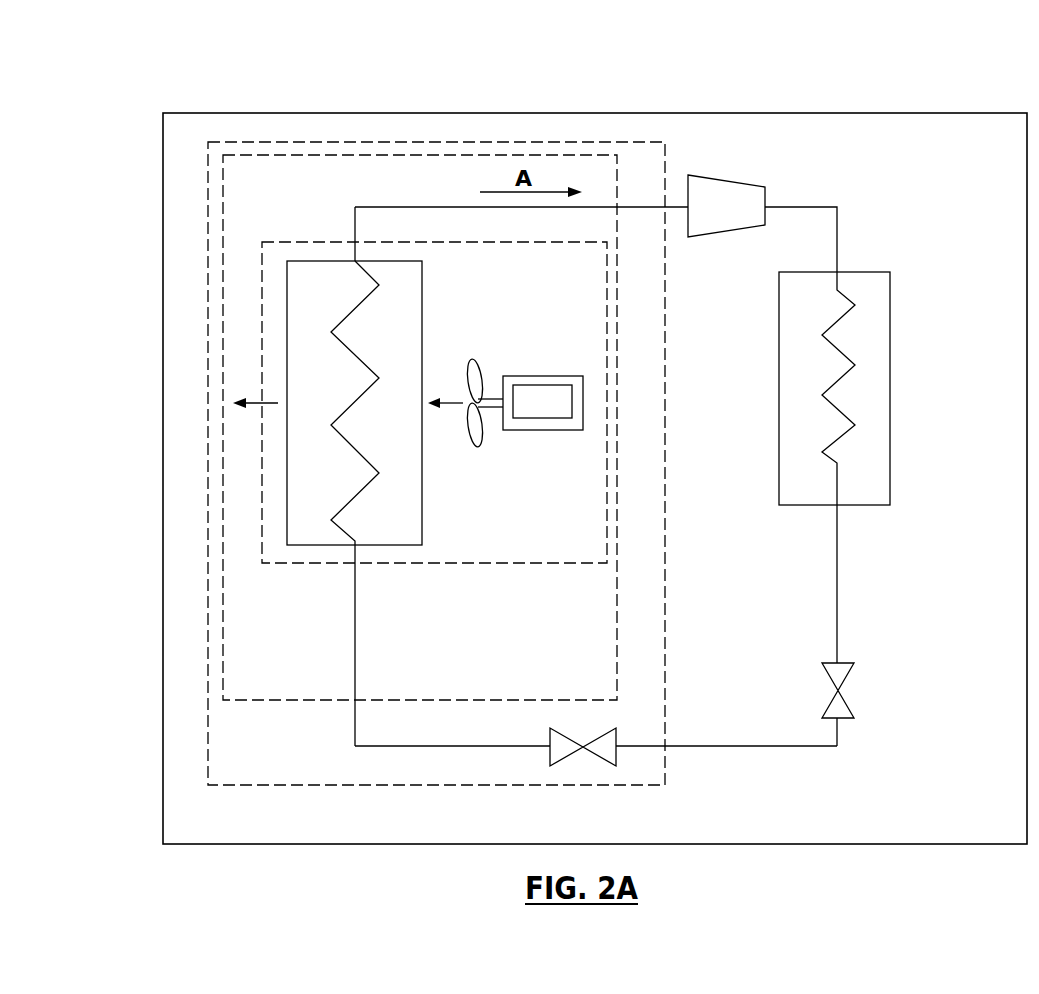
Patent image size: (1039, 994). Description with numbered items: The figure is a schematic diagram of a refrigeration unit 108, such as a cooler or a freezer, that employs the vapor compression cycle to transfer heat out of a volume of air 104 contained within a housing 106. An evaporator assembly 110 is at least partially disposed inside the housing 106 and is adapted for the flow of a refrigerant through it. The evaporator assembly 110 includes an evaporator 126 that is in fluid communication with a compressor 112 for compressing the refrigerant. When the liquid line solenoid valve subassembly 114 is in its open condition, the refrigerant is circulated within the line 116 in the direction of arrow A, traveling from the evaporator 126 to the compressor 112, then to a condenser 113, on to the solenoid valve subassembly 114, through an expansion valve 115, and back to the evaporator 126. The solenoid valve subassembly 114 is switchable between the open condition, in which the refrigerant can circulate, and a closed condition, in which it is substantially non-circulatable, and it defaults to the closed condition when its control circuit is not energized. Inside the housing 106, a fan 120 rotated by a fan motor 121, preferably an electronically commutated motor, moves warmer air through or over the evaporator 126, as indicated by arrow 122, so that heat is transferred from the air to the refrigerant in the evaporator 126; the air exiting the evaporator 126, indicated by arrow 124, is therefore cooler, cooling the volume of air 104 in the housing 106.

The volume of air 104 is at (299, 668).
The housing 106 is at (553, 138).
The refrigeration unit 108 is at (862, 108).
The evaporator assembly 110 is at (326, 232).
The compressor 112 is at (727, 182).
The condenser 113 is at (890, 393).
The liquid line solenoid valve subassembly 114 is at (858, 701).
The expansion valve 115 is at (597, 755).
The line 116 is at (822, 204).
The fan 120 is at (472, 362).
The fan motor 121 is at (533, 432).
The arrow 122 is at (462, 405).
The arrow 124 is at (278, 405).
The evaporator 126 is at (341, 379).